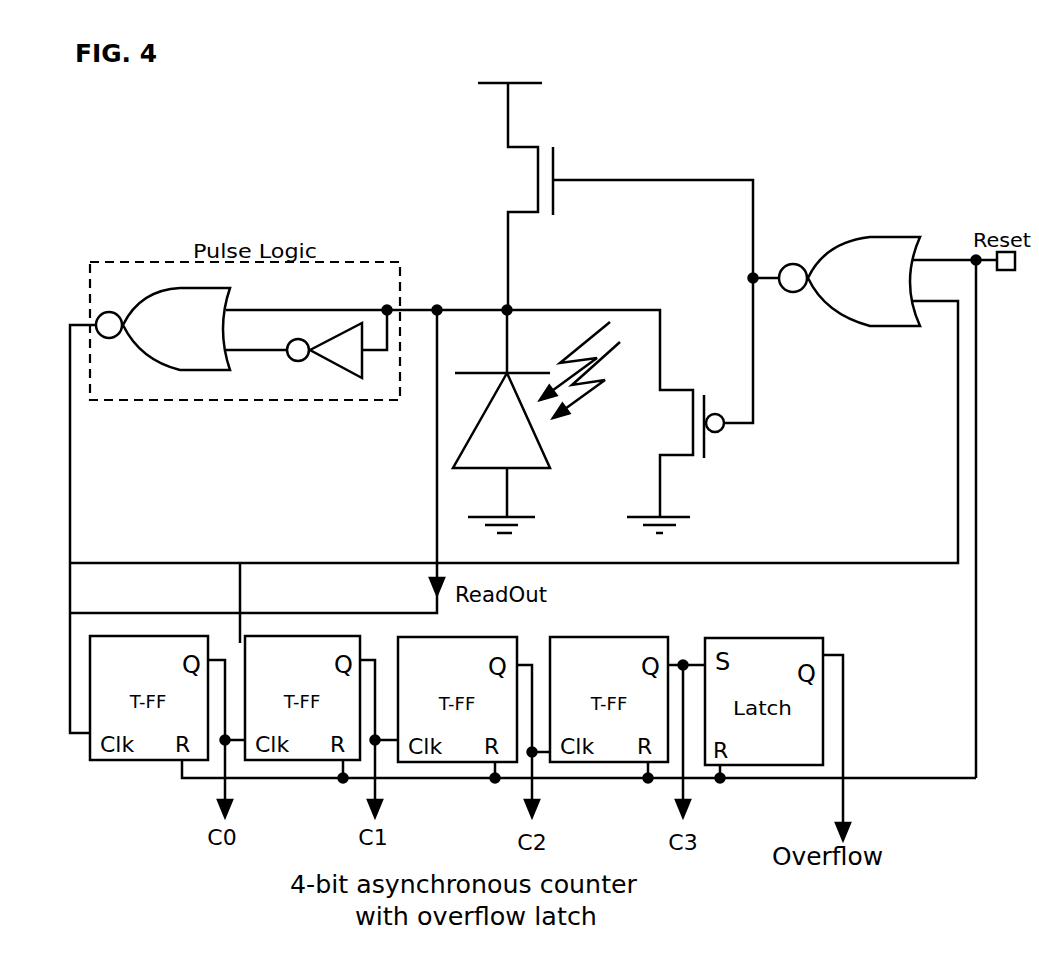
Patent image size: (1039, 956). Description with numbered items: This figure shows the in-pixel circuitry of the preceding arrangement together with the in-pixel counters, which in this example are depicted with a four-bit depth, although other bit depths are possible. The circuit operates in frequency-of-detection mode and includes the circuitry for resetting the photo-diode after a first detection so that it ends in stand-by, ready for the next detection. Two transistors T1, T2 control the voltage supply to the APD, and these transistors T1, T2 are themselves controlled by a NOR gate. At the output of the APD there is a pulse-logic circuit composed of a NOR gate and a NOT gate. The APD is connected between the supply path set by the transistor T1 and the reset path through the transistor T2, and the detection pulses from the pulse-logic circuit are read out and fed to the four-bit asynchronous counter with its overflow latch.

The transistor T1 is at (618, 234).
The transistor T2 is at (675, 464).
The element APD is at (536, 421).